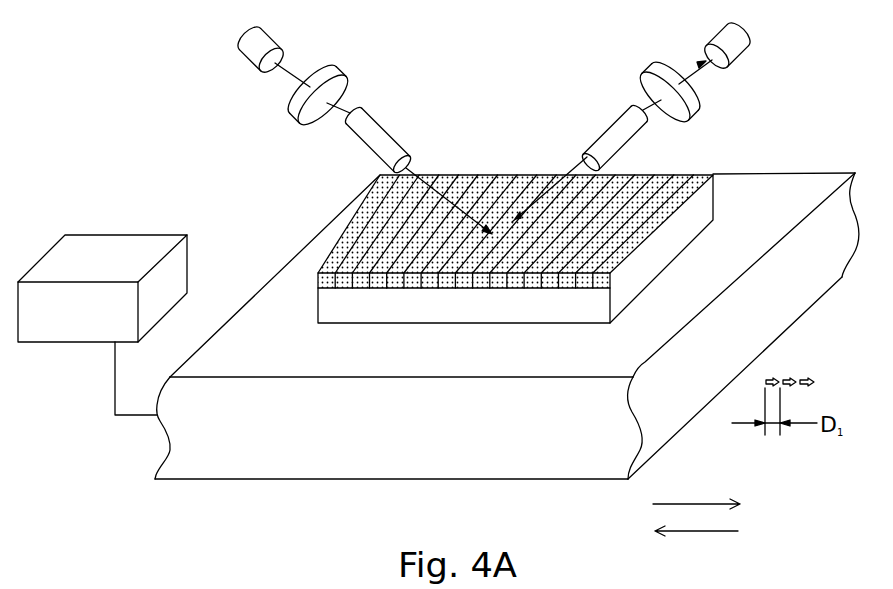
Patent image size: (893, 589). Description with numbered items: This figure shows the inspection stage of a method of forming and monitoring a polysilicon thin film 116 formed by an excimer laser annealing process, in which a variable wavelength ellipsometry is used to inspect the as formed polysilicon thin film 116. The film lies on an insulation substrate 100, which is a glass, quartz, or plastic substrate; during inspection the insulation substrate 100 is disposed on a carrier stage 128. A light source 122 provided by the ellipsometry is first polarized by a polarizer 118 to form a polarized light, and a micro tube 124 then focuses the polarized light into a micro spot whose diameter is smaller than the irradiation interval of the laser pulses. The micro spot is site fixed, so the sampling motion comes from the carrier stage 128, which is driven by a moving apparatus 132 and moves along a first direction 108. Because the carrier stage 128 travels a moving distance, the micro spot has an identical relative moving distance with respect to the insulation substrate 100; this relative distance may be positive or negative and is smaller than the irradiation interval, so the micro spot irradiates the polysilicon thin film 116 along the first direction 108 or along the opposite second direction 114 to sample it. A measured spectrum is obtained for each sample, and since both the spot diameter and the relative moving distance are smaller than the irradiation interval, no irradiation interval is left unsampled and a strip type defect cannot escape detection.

The insulation substrate 100 is at (468, 318).
The first direction 108 is at (678, 504).
The second direction 114 is at (715, 530).
The polysilicon thin film 116 is at (703, 191).
The polarizer 118 is at (296, 112).
The light source 122 is at (253, 58).
The micro tube 124 is at (370, 135).
The carrier stage 128 is at (435, 438).
The moving apparatus 132 is at (95, 320).